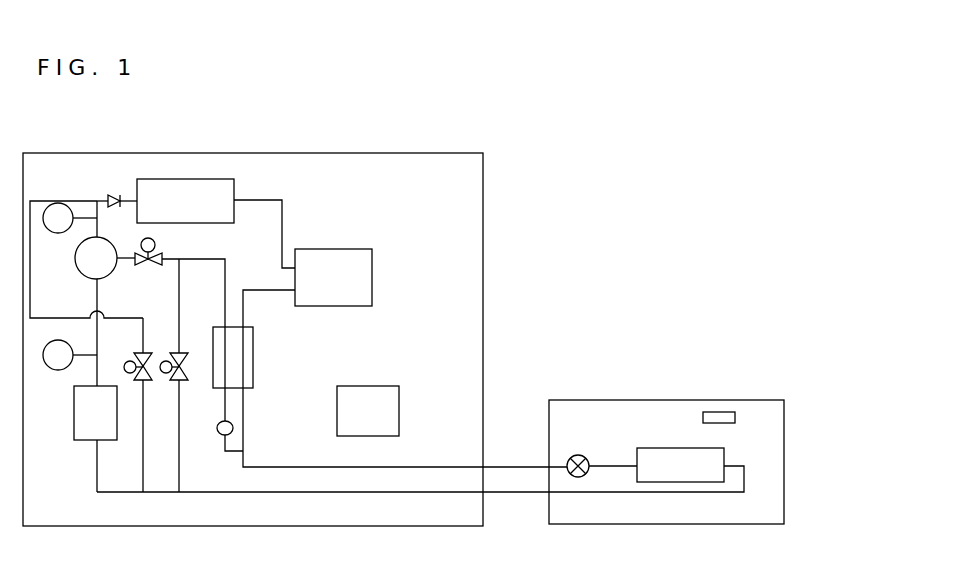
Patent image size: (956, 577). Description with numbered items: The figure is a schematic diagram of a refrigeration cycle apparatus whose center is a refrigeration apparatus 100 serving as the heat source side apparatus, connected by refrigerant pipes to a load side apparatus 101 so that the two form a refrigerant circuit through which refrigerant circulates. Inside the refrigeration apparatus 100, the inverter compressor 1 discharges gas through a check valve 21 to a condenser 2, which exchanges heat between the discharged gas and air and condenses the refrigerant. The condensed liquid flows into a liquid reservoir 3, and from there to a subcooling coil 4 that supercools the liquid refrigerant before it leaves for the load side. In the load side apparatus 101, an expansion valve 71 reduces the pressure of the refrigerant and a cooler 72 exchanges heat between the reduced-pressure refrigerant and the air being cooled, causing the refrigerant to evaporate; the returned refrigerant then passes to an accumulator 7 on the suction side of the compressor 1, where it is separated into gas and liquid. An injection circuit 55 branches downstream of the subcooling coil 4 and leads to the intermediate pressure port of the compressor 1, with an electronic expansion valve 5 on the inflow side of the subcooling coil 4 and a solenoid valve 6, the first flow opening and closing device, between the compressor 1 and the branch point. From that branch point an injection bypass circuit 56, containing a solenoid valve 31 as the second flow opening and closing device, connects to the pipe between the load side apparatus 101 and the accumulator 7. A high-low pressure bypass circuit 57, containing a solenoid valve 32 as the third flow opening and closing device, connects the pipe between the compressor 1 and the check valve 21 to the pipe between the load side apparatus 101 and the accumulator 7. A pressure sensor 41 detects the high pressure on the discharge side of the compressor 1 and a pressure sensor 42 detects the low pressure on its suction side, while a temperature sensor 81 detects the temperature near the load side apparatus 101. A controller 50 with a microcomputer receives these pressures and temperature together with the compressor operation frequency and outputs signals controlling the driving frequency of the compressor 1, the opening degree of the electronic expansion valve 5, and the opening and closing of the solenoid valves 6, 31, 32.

The refrigeration apparatus 100 is at (483, 222).
The load side apparatus 101 is at (784, 427).
The inverter compressor 1 is at (76, 266).
The condenser 2 is at (137, 180).
The check valve 21 is at (103, 196).
The liquid reservoir 3 is at (339, 249).
The subcooling coil 4 is at (253, 352).
The electronic expansion valve 5 is at (217, 427).
The solenoid valve 6 is at (145, 265).
The accumulator 7 is at (75, 417).
The solenoid valve 31 is at (166, 373).
The solenoid valve 32 is at (130, 373).
The pressure sensor 41 is at (52, 232).
The pressure sensor 42 is at (52, 369).
The controller 50 is at (371, 386).
The injection circuit 55 is at (228, 264).
The injection bypass circuit 56 is at (182, 285).
The high-low pressure bypass circuit 57 is at (33, 288).
The expansion valve 71 is at (583, 457).
The cooler 72 is at (682, 445).
The temperature sensor 81 is at (716, 412).